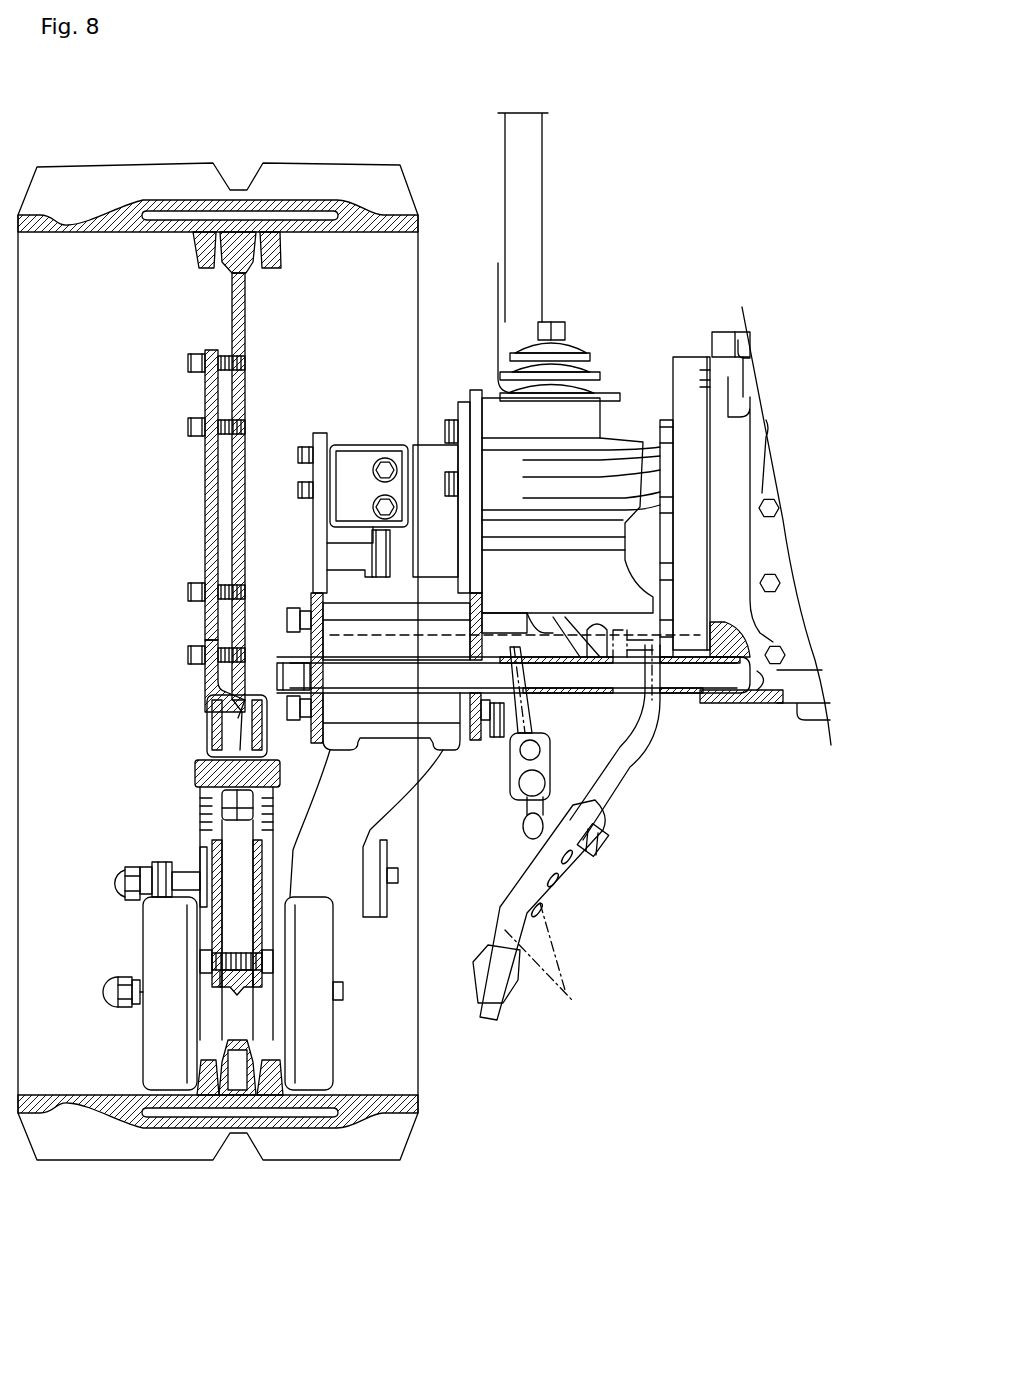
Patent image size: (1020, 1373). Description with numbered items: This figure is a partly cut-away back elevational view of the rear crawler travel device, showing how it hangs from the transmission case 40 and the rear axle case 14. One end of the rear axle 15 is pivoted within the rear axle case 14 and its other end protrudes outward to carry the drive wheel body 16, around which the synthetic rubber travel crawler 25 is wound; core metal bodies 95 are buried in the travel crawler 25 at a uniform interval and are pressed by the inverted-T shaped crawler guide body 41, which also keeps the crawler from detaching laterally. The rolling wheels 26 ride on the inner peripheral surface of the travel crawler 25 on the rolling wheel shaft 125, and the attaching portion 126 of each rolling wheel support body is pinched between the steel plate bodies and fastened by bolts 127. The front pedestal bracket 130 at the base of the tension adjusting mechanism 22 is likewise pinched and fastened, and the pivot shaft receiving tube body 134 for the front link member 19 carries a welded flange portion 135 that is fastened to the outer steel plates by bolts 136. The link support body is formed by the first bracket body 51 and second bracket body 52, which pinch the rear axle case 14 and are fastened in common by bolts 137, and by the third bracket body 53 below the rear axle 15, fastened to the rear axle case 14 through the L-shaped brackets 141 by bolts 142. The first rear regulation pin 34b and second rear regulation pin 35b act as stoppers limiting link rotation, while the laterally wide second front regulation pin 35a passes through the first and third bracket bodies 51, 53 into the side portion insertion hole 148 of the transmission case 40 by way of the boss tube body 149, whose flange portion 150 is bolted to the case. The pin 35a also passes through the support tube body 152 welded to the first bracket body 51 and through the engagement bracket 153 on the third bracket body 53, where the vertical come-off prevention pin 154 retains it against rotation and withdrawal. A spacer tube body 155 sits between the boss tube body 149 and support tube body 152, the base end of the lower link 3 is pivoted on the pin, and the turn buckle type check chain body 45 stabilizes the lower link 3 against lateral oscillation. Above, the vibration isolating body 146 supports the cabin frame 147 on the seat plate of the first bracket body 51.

The lower link 3 is at (545, 925).
The rear axle case 14 is at (635, 400).
The rear axle 15 is at (245, 497).
The drive wheel body 16 is at (232, 335).
The front link member 19 is at (395, 780).
The tension adjusting mechanism 22 is at (208, 705).
The travel crawler 25 is at (312, 180).
The rolling wheels 26 is at (150, 1048).
The first rear regulation pin 34b is at (353, 712).
The second front regulation pin 35a is at (213, 650).
The second rear regulation pin 35b is at (430, 670).
The transmission case 40 is at (745, 400).
The crawler guide body 41 is at (240, 1075).
The check chain body 45 is at (590, 855).
The first bracket body 51 is at (476, 390).
The second bracket body 52 is at (464, 410).
The third bracket body 53 is at (322, 520).
The core metal bodies 95 is at (205, 222).
The rolling wheel shaft 125 is at (118, 993).
The attaching portion 126 is at (245, 990).
The bolts 127 is at (200, 960).
The front pedestal bracket 130 is at (220, 790).
The pivot shaft receiving tube body 134 is at (200, 840).
The flange portion 135 is at (200, 872).
The bolts 136 is at (115, 880).
The bolts 137 is at (445, 440).
The L-shaped brackets 141 is at (360, 455).
The bolts 142 is at (298, 490).
The vibration isolating body 146 is at (573, 345).
The cabin frame 147 is at (525, 228).
The side portion insertion hole 148 is at (765, 695).
The boss tube body 149 is at (665, 705).
The flange portion 150 is at (706, 705).
The support tube body 152 is at (457, 695).
The engagement bracket 153 is at (290, 678).
The come-off prevention pin 154 is at (295, 645).
The spacer tube body 155 is at (590, 755).